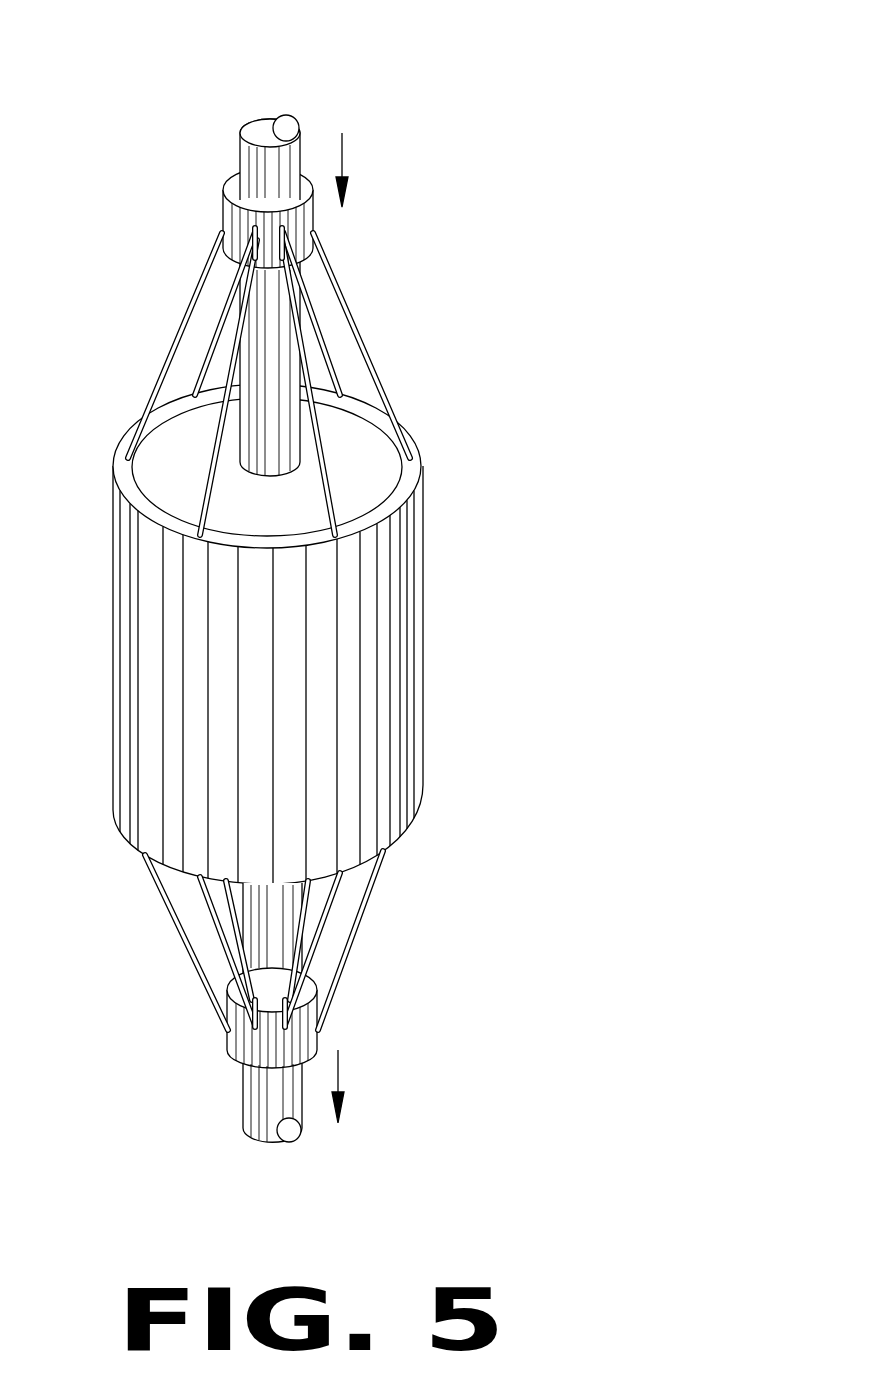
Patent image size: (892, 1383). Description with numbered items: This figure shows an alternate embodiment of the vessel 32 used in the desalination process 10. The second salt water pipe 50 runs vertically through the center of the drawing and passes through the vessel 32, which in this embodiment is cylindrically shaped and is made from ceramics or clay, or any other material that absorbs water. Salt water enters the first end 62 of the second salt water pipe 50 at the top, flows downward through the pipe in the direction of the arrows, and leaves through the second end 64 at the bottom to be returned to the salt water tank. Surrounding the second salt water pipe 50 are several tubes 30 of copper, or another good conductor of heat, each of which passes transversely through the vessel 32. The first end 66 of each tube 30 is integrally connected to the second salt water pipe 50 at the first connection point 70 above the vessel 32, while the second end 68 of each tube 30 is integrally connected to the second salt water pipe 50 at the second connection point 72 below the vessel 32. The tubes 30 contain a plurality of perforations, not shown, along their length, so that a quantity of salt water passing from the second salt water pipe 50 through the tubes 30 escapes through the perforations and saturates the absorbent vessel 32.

The desalination process 10 is at (390, 614).
The tube 30 is at (294, 584).
The vessel 32 is at (420, 620).
The second salt water pipe 50 is at (222, 238).
The first end 62 is at (262, 118).
The second end 64 is at (353, 1055).
The first end 66 is at (323, 240).
The second end 68 is at (320, 1015).
The first connection point 70 is at (233, 187).
The second connection point 72 is at (318, 1012).